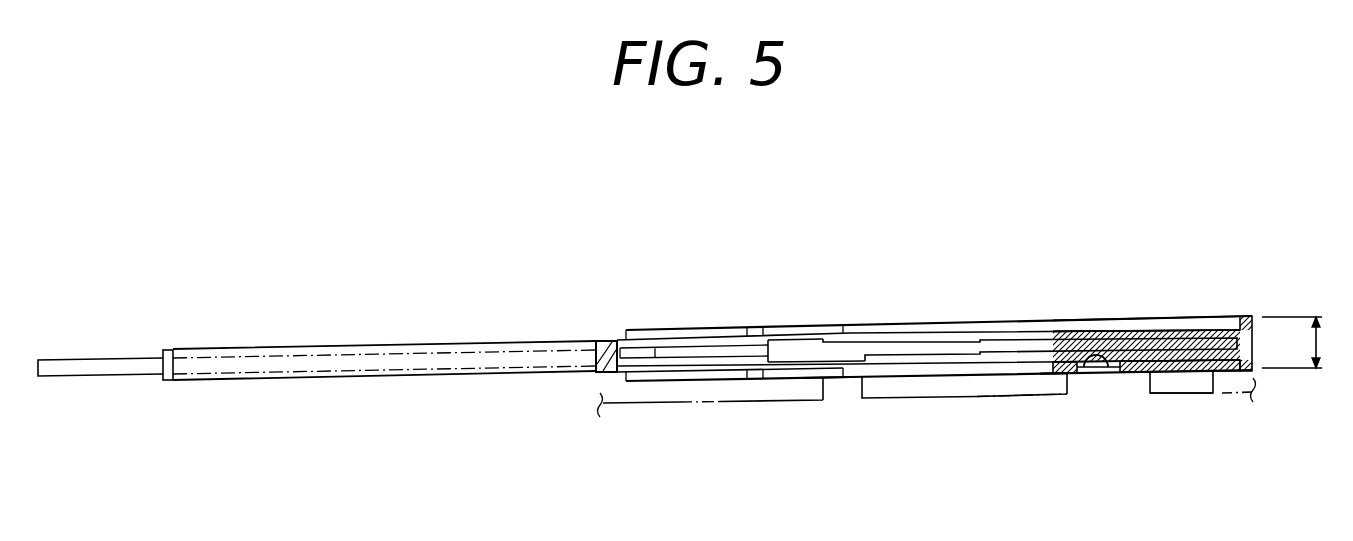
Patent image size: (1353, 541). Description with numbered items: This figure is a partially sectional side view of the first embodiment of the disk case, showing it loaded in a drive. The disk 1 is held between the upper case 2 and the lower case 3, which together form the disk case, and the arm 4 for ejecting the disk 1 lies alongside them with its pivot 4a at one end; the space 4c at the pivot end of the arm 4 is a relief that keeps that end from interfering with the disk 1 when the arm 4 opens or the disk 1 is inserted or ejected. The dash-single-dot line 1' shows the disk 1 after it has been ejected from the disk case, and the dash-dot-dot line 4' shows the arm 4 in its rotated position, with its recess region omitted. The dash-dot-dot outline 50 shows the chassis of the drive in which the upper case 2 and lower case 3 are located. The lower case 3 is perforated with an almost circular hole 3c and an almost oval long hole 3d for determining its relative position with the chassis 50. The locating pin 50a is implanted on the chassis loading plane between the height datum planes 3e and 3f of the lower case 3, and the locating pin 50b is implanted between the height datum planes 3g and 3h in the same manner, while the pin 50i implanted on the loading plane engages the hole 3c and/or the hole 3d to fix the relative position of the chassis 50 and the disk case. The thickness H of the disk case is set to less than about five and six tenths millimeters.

The disk ejected from the disk case 1' is at (100, 329).
The arm in rotated state 4' is at (379, 323).
The arm 4 is at (917, 318).
The pivot 4a is at (757, 327).
The space 4c is at (810, 338).
The disk main body 1 is at (1030, 305).
The upper case body 2 is at (1077, 322).
The locating pin 50i is at (1105, 332).
The chassis 50 is at (660, 403).
The locating pin 50a is at (828, 383).
The locating pin 50b is at (1066, 396).
The height datum plane 3e is at (851, 383).
The height datum plane 3f is at (987, 428).
The hole 3c is at (1081, 373).
The hole 3d is at (1118, 373).
The height datum plane 3g is at (1133, 382).
The height datum plane 3h is at (1181, 424).
The lower case body 3 is at (1213, 393).
The thickness of the disk case H is at (1303, 342).